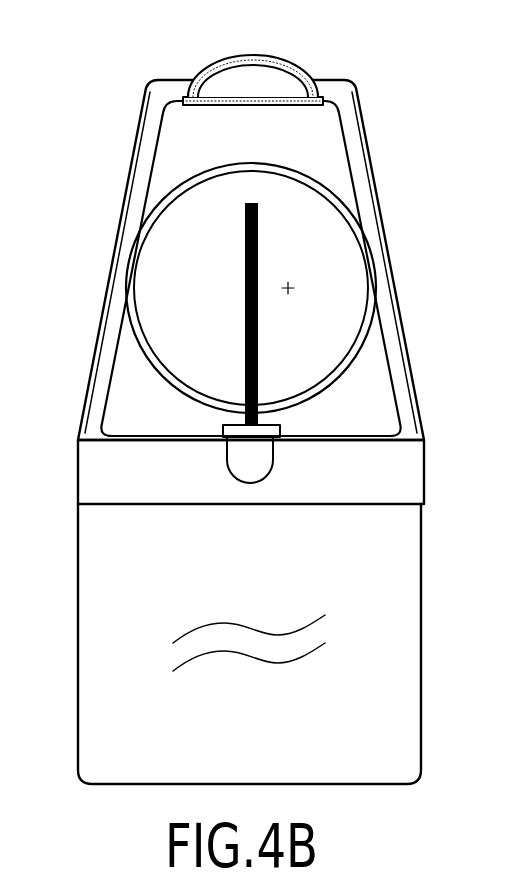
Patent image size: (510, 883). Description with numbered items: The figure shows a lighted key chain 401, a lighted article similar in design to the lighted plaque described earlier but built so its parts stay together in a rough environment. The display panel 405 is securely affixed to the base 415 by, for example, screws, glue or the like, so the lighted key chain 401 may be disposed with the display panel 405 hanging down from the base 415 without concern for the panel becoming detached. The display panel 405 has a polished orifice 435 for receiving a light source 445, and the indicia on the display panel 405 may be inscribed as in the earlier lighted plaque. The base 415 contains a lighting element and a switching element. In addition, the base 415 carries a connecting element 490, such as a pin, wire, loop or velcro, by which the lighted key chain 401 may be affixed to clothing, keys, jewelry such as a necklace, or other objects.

The lighted key chain 401 is at (46, 263).
The base 415 is at (130, 154).
The connecting element 490 is at (202, 72).
The polished orifice 435 is at (248, 450).
The light source 445 is at (243, 467).
The display panel 405 is at (79, 632).